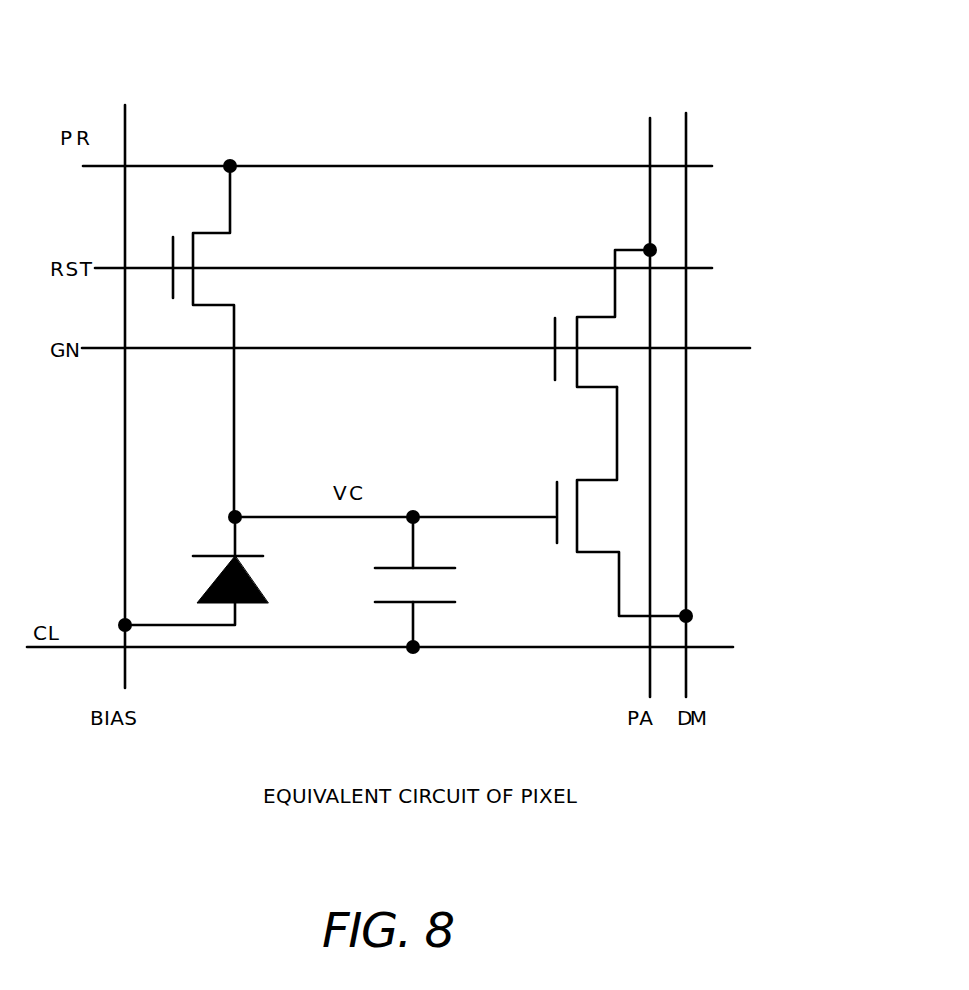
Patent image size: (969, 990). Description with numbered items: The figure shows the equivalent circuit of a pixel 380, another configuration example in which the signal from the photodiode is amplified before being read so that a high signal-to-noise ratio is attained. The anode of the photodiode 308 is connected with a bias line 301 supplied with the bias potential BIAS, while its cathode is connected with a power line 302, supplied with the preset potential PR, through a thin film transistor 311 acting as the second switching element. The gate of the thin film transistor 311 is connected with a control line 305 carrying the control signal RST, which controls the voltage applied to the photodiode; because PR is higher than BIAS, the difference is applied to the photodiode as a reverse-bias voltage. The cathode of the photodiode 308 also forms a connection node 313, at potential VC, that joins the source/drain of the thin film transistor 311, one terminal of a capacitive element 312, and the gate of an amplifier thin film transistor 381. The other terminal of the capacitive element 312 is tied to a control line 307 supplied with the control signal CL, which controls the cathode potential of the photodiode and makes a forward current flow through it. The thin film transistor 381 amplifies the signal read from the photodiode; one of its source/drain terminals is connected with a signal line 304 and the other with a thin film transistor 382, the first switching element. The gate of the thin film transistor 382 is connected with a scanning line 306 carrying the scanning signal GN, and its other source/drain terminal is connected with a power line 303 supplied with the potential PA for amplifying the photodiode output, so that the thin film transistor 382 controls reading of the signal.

The bias line 301 is at (119, 155).
The power line 302 is at (317, 166).
The power line 303 is at (650, 140).
The signal line 304 is at (686, 218).
The control line 305 is at (363, 268).
The scanning line 306 is at (412, 348).
The control line 307 is at (327, 648).
The photodiode 308 is at (258, 588).
The thin film transistor 311 is at (193, 263).
The capacitive element 312 is at (427, 565).
The connection node 313 is at (243, 512).
The pixel 380 is at (545, 88).
The amplifier thin film transistor 381 is at (577, 518).
The thin film transistor 382 is at (577, 317).